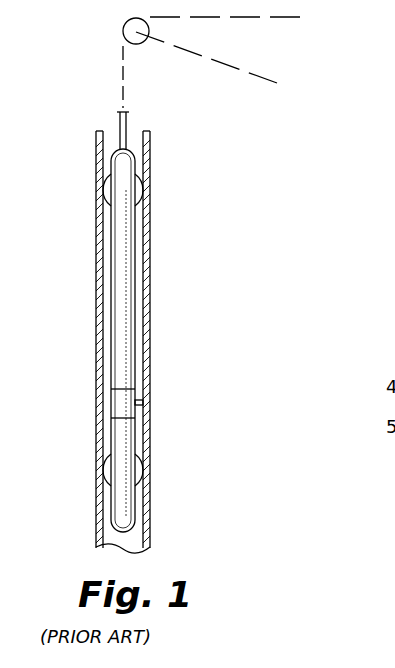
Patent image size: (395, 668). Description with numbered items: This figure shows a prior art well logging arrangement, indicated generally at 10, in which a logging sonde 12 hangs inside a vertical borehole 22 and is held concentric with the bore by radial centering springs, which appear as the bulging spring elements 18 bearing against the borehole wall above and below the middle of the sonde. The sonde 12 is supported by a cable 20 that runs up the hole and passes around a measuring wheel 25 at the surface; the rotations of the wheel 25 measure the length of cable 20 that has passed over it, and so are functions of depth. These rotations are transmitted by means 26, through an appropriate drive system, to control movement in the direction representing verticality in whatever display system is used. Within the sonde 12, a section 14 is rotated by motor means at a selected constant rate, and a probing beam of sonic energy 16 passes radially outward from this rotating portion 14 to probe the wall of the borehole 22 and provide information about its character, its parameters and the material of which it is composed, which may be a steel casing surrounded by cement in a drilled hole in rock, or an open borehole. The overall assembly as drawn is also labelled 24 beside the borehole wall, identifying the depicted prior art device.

The prior art logging arrangement 10 is at (130, 342).
The logging sonde 12 is at (127, 284).
The rotating section of the sonde 14 is at (128, 393).
The probing beam of sonic energy 16 is at (138, 408).
The bulges / bearing rings 18 is at (138, 192).
The cable 20 is at (258, 17).
The vertical borehole 22 is at (98, 276).
The prior art device 24 is at (70, 344).
The measuring wheel 25 is at (136, 45).
The transmission means 26 is at (221, 63).